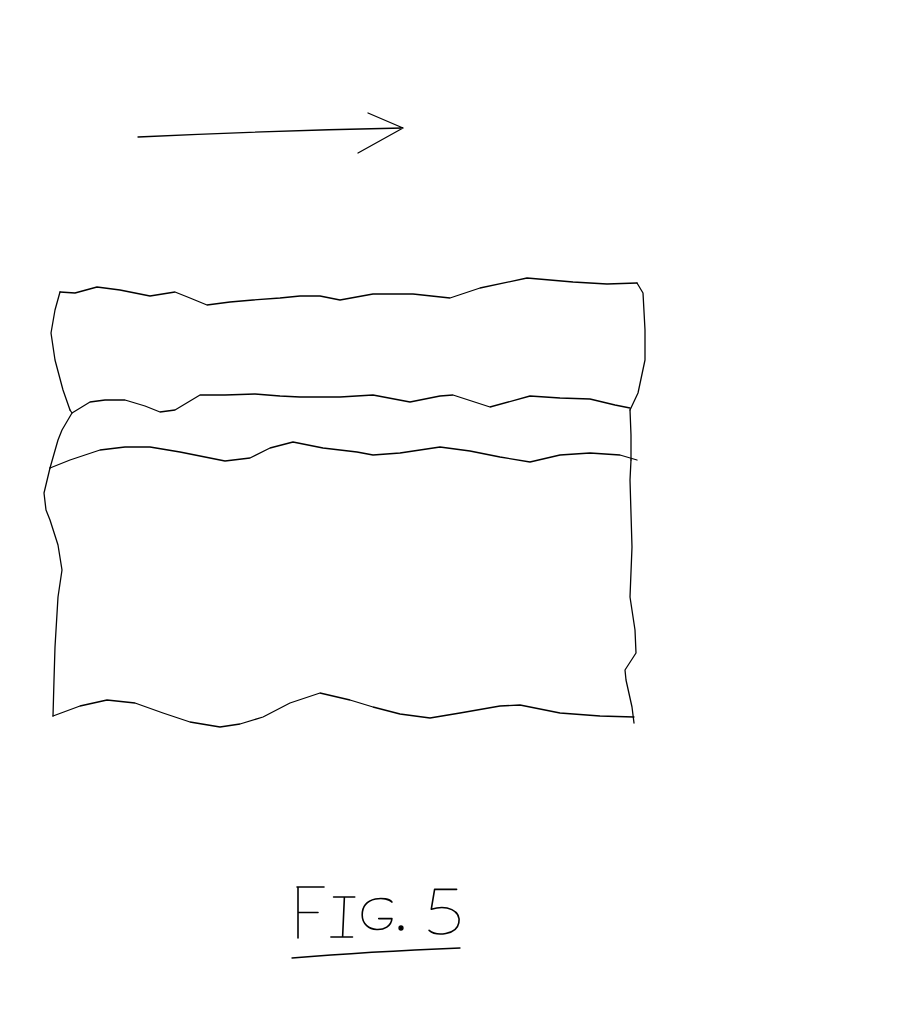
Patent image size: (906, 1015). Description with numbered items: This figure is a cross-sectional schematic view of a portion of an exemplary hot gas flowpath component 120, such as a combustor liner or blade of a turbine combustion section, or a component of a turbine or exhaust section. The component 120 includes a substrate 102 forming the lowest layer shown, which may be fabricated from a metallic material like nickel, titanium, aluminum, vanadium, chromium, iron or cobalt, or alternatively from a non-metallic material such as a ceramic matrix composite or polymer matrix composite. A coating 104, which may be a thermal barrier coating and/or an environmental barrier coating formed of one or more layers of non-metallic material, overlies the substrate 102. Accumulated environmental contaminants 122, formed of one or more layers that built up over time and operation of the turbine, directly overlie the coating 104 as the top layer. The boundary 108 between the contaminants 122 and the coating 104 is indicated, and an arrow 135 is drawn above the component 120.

The hot gas flowpath component 120 is at (413, 366).
The direction arrow 135 is at (270, 79).
The accumulated environmental contaminants 122 is at (348, 299).
The interface 108 is at (351, 291).
The coating 104 is at (406, 437).
The substrate 102 is at (340, 593).